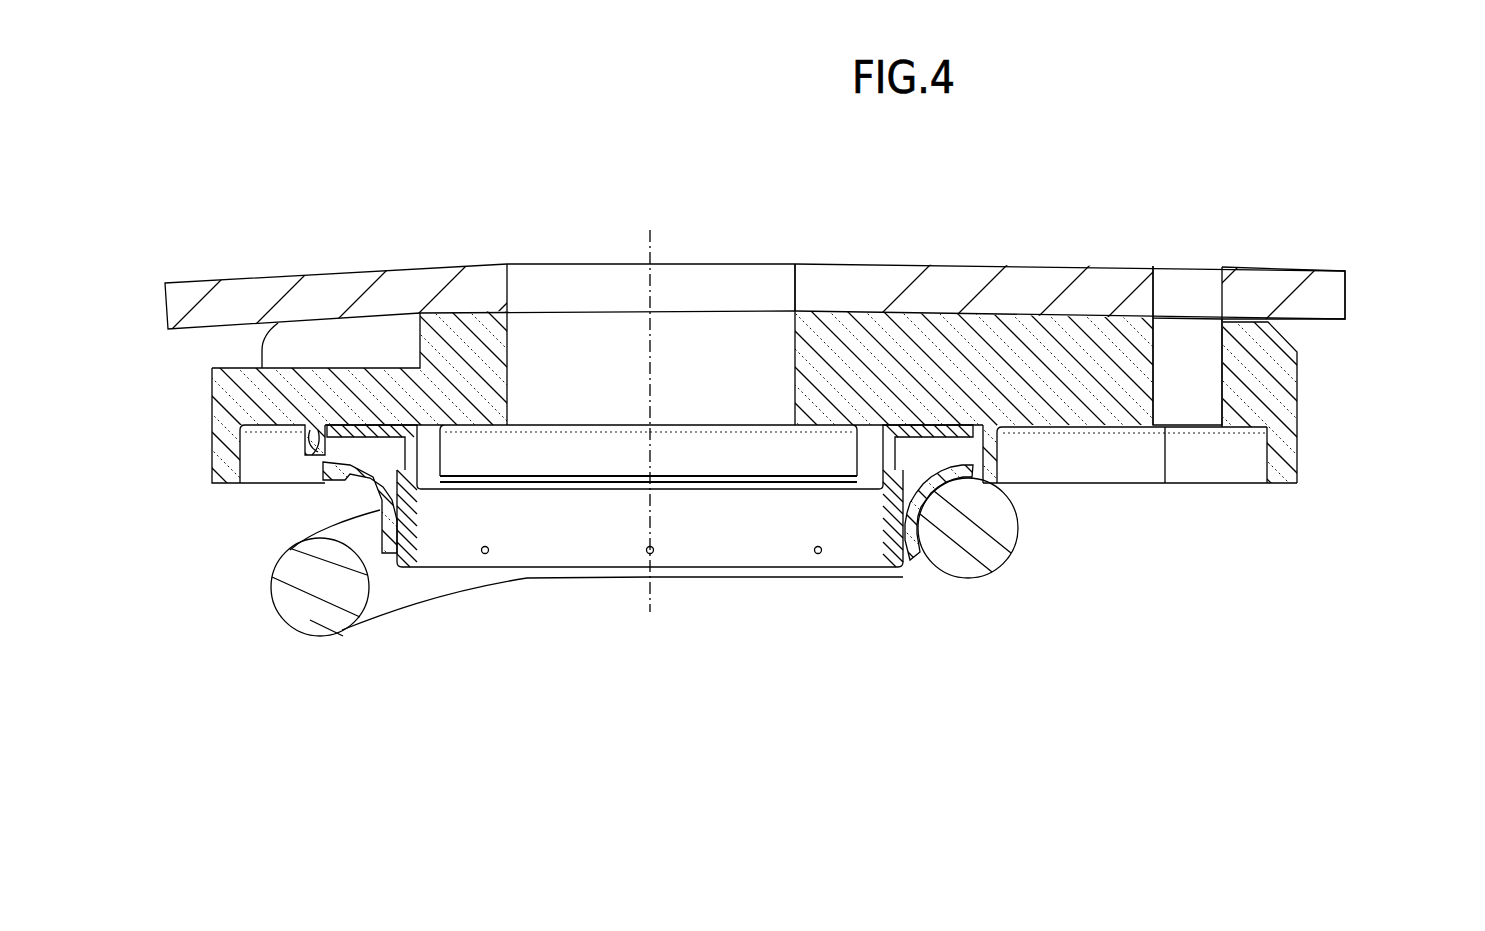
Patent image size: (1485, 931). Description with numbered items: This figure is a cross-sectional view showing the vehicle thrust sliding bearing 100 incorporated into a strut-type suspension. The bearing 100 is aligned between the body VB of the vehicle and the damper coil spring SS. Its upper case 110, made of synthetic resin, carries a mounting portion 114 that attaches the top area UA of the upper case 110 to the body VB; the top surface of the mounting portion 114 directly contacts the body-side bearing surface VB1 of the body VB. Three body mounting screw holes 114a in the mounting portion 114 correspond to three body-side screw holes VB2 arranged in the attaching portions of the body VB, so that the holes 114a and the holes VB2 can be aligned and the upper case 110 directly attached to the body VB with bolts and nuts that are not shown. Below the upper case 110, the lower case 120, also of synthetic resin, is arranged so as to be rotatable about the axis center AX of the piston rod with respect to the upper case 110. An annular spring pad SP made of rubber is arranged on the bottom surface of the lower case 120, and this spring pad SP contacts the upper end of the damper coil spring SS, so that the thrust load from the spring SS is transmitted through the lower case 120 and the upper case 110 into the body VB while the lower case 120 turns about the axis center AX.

The vehicle thrust sliding bearing 100 is at (195, 512).
The upper case 110 is at (1297, 457).
The mounting portion 114 is at (1243, 388).
The body mounting screw hole 114a is at (1210, 360).
The lower case 120 is at (890, 562).
The axis center AX is at (655, 600).
The body VB is at (875, 282).
The body-side bearing surface VB1 is at (1093, 318).
The body-side screw hole VB2 is at (1197, 288).
The top area UA is at (1364, 312).
The spring pad SP is at (968, 472).
The damper coil spring SS is at (988, 555).